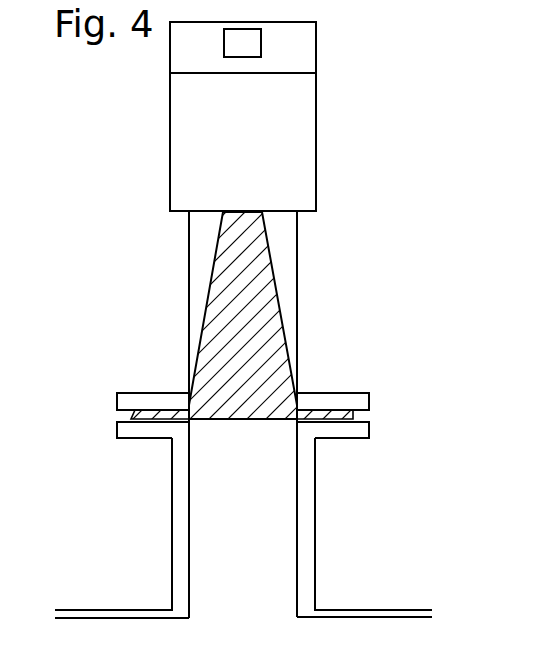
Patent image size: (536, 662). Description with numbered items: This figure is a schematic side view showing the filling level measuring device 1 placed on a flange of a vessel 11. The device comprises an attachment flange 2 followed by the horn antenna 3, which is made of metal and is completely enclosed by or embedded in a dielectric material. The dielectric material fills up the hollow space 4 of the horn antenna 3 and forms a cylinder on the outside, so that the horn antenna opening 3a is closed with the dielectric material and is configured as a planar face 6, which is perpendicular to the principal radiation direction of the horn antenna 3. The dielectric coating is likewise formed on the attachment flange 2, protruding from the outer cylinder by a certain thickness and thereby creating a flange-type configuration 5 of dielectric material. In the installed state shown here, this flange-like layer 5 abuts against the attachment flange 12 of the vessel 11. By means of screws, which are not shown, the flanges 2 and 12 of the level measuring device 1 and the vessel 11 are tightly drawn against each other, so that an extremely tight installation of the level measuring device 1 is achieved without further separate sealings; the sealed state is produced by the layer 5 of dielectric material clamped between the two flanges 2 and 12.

The filling level measuring device 1 is at (283, 173).
The attachment flange 2 is at (348, 403).
The horn antenna 3 is at (287, 262).
The horn antenna opening 3a is at (241, 428).
The hollow space 4 is at (270, 333).
The flange-type configuration of dielectric material 5 is at (132, 412).
The planar face 6 is at (262, 422).
The vessel 11 is at (333, 613).
The attachment flange of vessel 12 is at (370, 433).